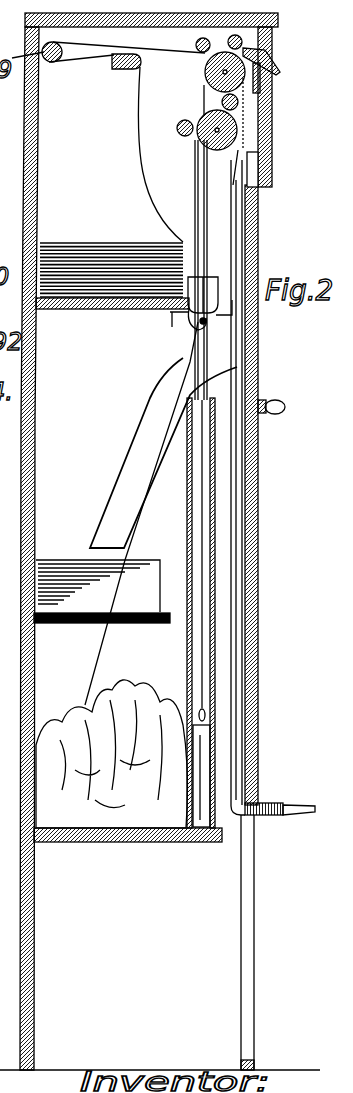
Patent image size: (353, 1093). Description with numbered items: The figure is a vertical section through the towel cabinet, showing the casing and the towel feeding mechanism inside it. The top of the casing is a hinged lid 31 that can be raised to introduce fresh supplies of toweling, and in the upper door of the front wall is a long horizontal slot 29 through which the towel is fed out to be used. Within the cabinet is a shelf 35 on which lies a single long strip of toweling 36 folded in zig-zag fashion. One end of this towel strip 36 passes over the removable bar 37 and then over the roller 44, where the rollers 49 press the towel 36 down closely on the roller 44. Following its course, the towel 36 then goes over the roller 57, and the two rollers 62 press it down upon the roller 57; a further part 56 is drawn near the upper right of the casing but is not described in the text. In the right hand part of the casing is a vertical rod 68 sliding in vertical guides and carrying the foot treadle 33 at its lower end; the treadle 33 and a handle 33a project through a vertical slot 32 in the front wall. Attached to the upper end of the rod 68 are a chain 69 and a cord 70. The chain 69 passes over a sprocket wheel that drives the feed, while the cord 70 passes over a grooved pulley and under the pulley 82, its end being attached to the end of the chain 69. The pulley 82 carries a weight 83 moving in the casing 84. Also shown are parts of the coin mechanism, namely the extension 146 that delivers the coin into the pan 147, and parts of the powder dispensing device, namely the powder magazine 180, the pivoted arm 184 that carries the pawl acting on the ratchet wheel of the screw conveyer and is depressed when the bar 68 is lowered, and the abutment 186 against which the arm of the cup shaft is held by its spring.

The horizontal slot 29 is at (287, 83).
The hinged lid 31 is at (276, 22).
The vertical slot 32 is at (250, 920).
The foot treadle 33 is at (282, 809).
The handle 33a is at (313, 388).
The shelf 35 is at (100, 300).
The towel strip 36 is at (87, 250).
The removable bar 37 is at (112, 68).
The roller 44 is at (206, 70).
The rollers 49 is at (235, 37).
The wedge bracket 56 is at (281, 67).
The roller 57 is at (205, 143).
The rollers 62 is at (224, 100).
The vertical rod 68 is at (258, 475).
The chain 69 is at (208, 213).
The cord 70 is at (207, 249).
The pulley 82 is at (238, 700).
The weight 83 is at (196, 838).
The casing 84 is at (216, 632).
The extension 146 is at (126, 475).
The pan 147 is at (58, 572).
The powder magazine 180 is at (216, 292).
The pivoted arm 184 is at (237, 333).
The abutment 186 is at (195, 328).